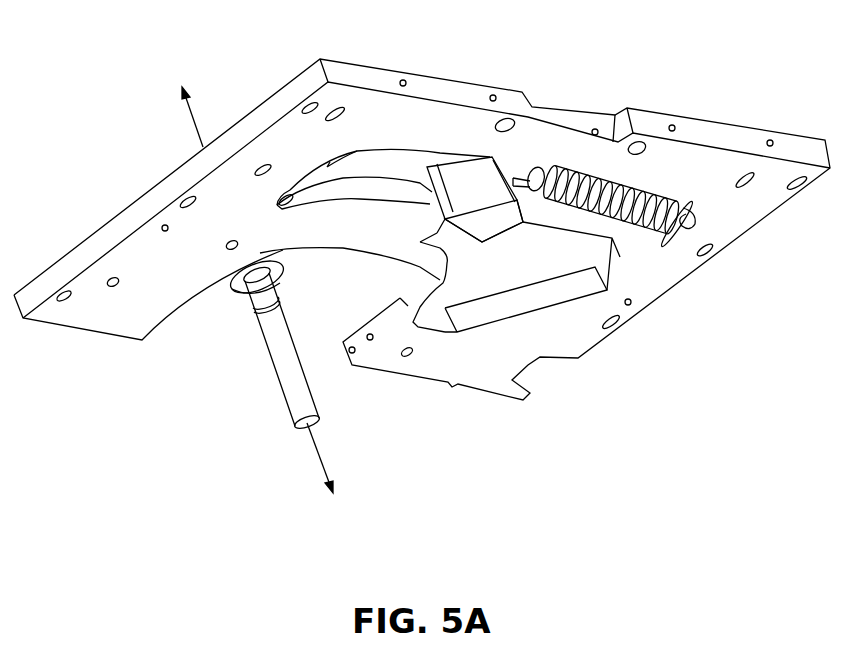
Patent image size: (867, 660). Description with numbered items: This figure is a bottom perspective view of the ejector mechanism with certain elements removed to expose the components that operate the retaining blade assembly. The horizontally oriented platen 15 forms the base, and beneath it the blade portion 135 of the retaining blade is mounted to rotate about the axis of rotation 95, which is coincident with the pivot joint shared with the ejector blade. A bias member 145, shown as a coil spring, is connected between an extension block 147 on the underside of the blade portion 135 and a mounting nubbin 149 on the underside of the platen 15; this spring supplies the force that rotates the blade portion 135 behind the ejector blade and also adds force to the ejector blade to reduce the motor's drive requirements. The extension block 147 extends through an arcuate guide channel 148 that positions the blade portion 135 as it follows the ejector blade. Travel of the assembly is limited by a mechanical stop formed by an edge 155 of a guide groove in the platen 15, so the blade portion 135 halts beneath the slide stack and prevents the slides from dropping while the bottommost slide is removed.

The platen 15 is at (678, 108).
The axis of rotation 95 is at (200, 128).
The blade portion 135 is at (408, 155).
The bias member 145 is at (650, 197).
The extension block 147 is at (500, 228).
The arcuate guide channel 148 is at (448, 142).
The mounting nubbin 149 is at (700, 226).
The edge 155 is at (413, 203).